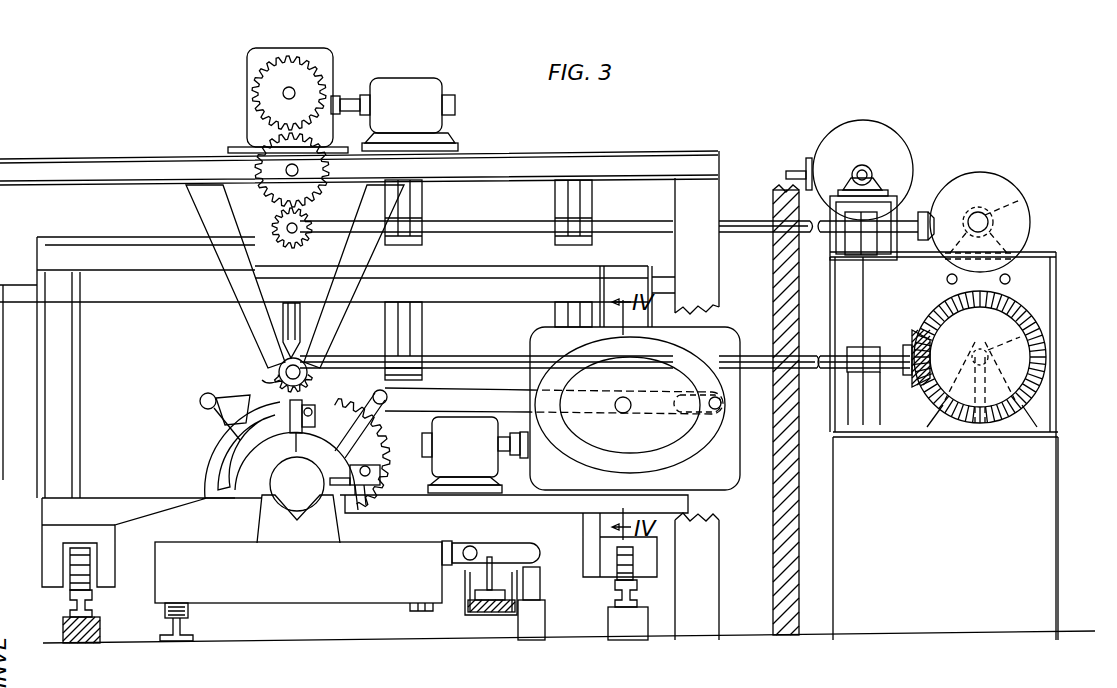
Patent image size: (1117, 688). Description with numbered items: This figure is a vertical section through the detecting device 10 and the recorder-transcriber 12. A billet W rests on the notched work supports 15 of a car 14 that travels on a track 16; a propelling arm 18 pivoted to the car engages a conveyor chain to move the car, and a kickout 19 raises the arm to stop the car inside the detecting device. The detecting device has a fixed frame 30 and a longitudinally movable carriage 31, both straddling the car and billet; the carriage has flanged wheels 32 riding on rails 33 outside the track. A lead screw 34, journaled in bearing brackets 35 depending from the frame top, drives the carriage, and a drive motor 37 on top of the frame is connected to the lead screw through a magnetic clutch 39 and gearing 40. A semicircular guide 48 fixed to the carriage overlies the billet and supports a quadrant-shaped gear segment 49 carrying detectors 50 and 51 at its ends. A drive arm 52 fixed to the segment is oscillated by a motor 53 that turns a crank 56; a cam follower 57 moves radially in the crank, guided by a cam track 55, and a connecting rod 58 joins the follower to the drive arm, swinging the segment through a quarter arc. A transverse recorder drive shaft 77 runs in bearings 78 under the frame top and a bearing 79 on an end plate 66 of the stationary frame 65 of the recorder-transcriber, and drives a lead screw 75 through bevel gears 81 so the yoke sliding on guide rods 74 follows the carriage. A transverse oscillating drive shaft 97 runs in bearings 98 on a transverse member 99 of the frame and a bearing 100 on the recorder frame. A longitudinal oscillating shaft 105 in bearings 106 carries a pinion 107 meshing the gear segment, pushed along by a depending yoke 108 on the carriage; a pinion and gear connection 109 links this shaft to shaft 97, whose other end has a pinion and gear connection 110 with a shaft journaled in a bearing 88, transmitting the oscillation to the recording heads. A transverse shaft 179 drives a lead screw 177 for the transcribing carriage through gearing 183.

The detecting device 10 is at (130, 112).
The recorder-transcriber 12 is at (1004, 162).
The car 14 is at (328, 589).
The notched work supports 15 is at (262, 523).
The track 16 is at (212, 636).
The propelling arm 18 is at (528, 551).
The kickout 19 is at (545, 580).
The fixed frame 30 is at (81, 160).
The carriage 31 is at (74, 420).
The flanged wheels 32 is at (90, 592).
The rails 33 is at (72, 606).
The lead screw 34 is at (284, 226).
The bearing brackets 35 is at (312, 208).
The drive motor 37 is at (410, 90).
The magnetic clutch 39 is at (246, 120).
The gearing 40 is at (309, 68).
The semicircular guide 48 is at (212, 456).
The quadrant-shaped gear segment 49 is at (375, 457).
The detector 50 is at (288, 432).
The detector 51 is at (362, 496).
The drive arm 52 is at (215, 420).
The motor 53 is at (475, 455).
The cam track 55 is at (680, 449).
The crank 56 is at (640, 413).
The cam follower 57 is at (733, 412).
The connecting rod 58 is at (582, 440).
The stationary frame 65 is at (945, 536).
The end plate 66 is at (1052, 300).
The guide rods 74 is at (1000, 282).
The lead screw 75 is at (1022, 204).
The recorder drive shaft 77 is at (756, 234).
The bearings 78 is at (421, 240).
The bearing 79 is at (877, 238).
The bevel gears 81 is at (950, 178).
The bearing 88 is at (1046, 338).
The transverse oscillating drive shaft 97 is at (762, 370).
The bearings 98 is at (420, 355).
The transverse member 99 is at (493, 298).
The bearing 100 is at (860, 346).
The longitudinal oscillating shaft 105 is at (279, 368).
The bearings 106 is at (281, 374).
The pinion 107 is at (285, 389).
The depending yoke 108 is at (240, 321).
The pinion and gear connection 109 is at (373, 397).
The pinion and gear connection 110 is at (915, 378).
The lead screw 177 is at (870, 172).
The transverse shaft 179 is at (788, 170).
The gearing 183 is at (862, 128).